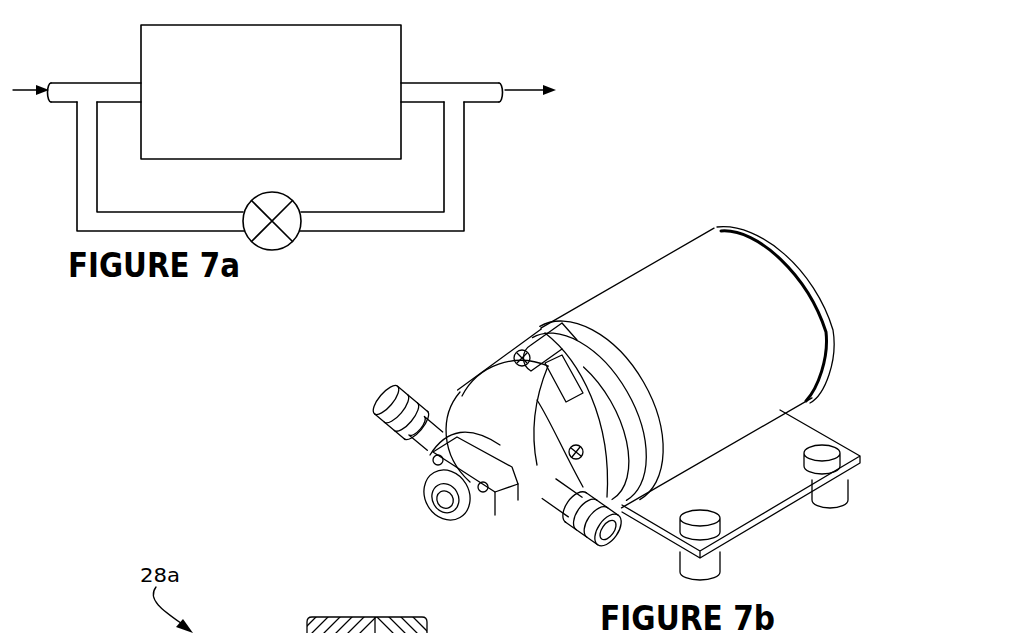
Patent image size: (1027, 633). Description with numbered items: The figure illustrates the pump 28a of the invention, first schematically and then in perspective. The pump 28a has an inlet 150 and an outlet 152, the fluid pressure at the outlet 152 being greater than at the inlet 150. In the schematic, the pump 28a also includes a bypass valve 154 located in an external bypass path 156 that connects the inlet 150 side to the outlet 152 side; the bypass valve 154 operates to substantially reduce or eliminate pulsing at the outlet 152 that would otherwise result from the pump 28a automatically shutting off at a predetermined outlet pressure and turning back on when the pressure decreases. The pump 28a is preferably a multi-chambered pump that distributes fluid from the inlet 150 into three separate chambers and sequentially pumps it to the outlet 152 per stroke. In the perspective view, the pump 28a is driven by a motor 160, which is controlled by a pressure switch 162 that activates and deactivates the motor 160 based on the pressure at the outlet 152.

In FIG. 7A, the pump 28a is at (455, 38).
In FIG. 7B, the pump 28a is at (497, 384).
In FIG. 7A, the inlet 150 is at (63, 83).
In FIG. 7B, the inlet 150 is at (368, 386).
In FIG. 7A, the outlet 152 is at (472, 83).
In FIG. 7B, the outlet 152 is at (606, 532).
In FIG. 7A, the bypass valve 154 is at (288, 196).
In FIG. 7A, the external bypass path 156 is at (458, 177).
In FIG. 7B, the motor 160 is at (612, 288).
In FIG. 7B, the pressure switch 162 is at (443, 500).